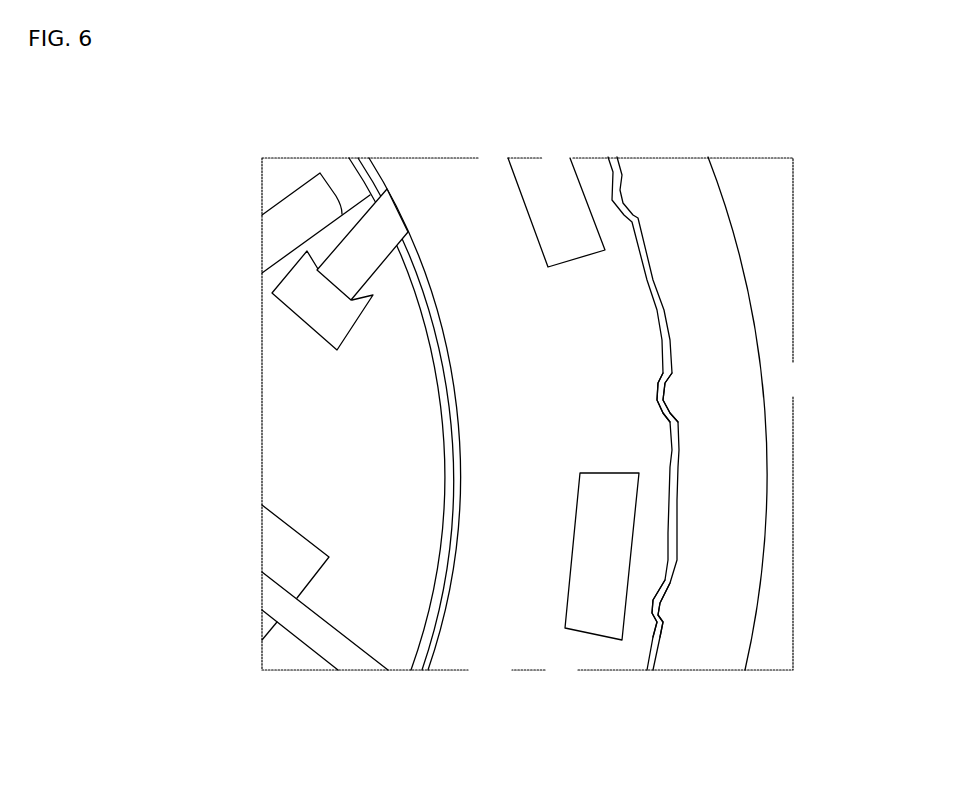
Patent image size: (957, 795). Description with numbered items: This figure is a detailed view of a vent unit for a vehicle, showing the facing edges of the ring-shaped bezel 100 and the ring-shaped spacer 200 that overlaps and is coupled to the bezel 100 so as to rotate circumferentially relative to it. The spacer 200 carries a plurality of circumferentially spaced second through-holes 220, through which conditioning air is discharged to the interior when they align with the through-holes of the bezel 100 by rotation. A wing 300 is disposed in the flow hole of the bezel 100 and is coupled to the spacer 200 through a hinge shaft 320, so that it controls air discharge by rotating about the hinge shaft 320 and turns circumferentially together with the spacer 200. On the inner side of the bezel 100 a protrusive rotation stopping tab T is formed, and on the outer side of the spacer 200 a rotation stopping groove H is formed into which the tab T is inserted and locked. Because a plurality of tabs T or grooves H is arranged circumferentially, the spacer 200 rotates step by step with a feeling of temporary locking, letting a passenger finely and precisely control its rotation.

The bezel 100 is at (730, 387).
The spacer 200 is at (448, 188).
The second through-holes 220 is at (553, 183).
The wing 300 is at (297, 385).
The hinge shaft 320 is at (342, 252).
The rotation stopping tab T is at (660, 610).
The rotation stopping groove H is at (653, 603).